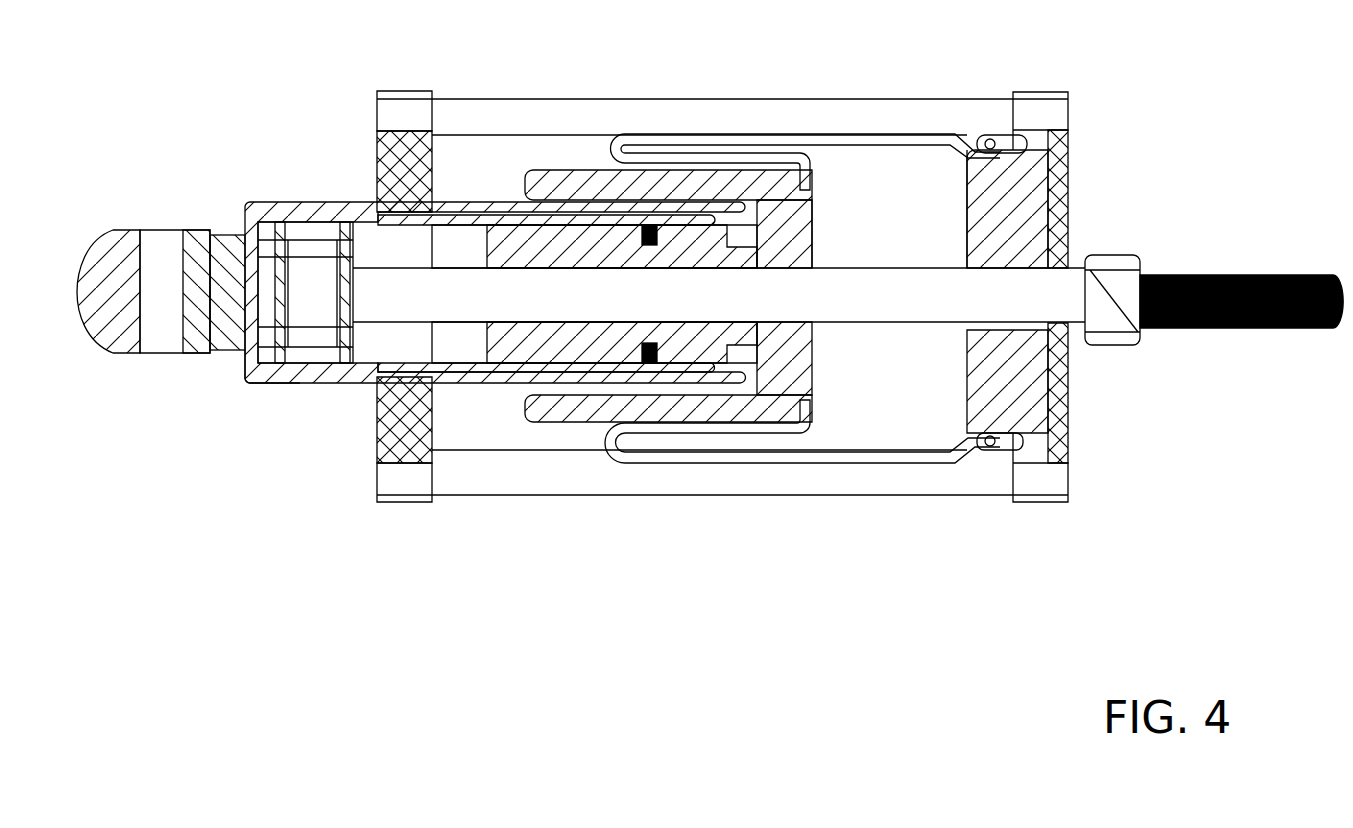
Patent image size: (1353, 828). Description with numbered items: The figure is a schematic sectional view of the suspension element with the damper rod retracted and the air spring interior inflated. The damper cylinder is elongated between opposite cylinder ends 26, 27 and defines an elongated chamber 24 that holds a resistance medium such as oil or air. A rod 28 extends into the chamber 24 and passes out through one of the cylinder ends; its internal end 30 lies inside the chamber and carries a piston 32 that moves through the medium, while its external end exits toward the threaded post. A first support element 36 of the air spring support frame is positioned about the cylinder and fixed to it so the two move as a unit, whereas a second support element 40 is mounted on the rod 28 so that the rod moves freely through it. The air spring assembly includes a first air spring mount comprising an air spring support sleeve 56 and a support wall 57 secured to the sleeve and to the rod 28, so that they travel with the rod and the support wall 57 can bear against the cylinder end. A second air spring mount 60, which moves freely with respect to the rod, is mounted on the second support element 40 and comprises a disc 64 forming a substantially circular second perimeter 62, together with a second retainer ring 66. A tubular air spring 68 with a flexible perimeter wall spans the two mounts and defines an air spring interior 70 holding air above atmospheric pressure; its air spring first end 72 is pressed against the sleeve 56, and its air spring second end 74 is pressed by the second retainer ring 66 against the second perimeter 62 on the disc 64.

The chamber 24 is at (443, 243).
The cylinder end 26 is at (252, 355).
The cylinder end 27 is at (587, 213).
The rod 28 is at (868, 300).
The internal end 30 is at (363, 283).
The piston 32 is at (317, 353).
The first support element 36 is at (380, 430).
The second support element 40 is at (1060, 228).
The air spring support sleeve 56 is at (585, 408).
The support wall 57 is at (810, 390).
The second air spring mount 60 is at (1017, 187).
The second perimeter 62 is at (1003, 432).
The disc 64 is at (1027, 400).
The second retainer ring 66 is at (990, 145).
The tubular air spring 68 is at (782, 137).
The air spring interior 70 is at (885, 198).
The air spring first end 72 is at (750, 433).
The air spring second end 74 is at (943, 460).